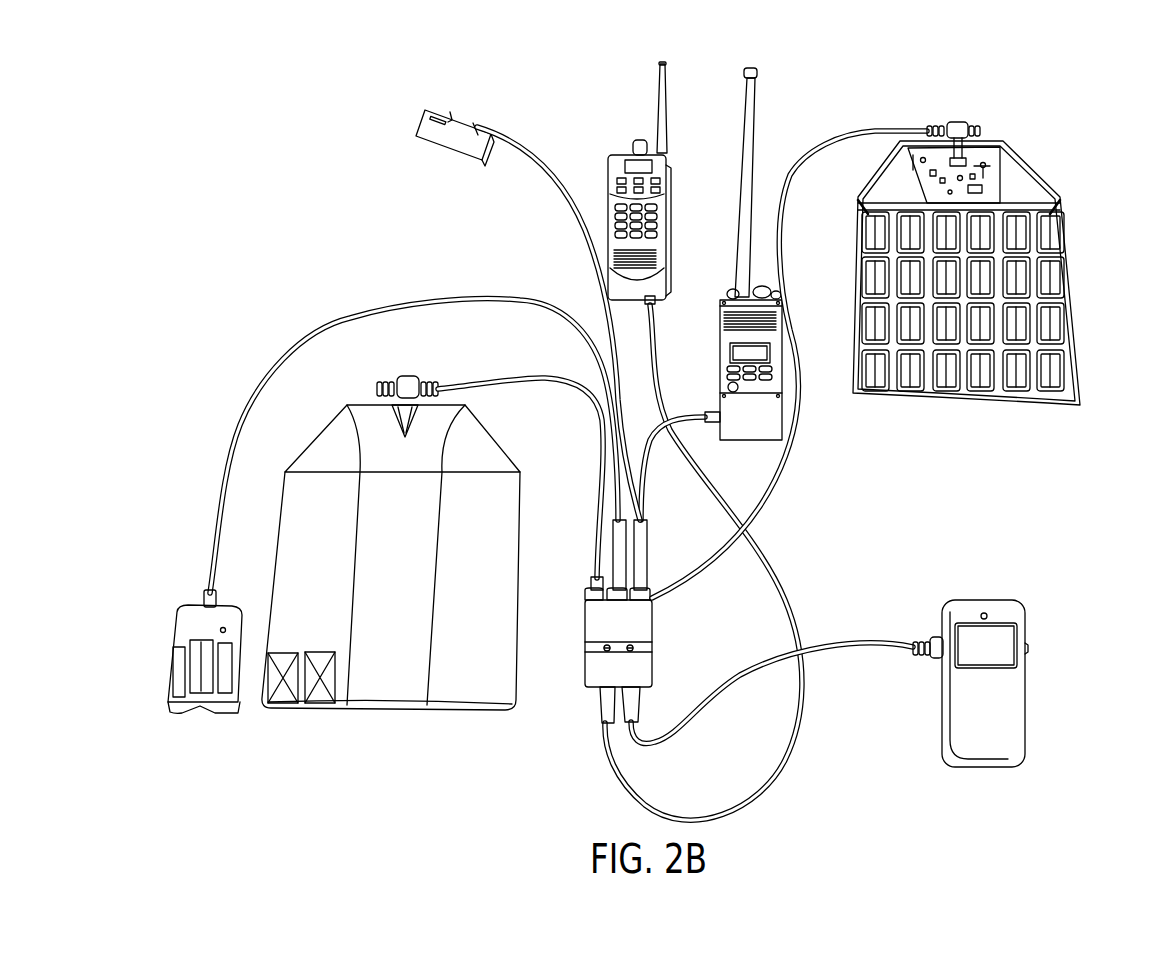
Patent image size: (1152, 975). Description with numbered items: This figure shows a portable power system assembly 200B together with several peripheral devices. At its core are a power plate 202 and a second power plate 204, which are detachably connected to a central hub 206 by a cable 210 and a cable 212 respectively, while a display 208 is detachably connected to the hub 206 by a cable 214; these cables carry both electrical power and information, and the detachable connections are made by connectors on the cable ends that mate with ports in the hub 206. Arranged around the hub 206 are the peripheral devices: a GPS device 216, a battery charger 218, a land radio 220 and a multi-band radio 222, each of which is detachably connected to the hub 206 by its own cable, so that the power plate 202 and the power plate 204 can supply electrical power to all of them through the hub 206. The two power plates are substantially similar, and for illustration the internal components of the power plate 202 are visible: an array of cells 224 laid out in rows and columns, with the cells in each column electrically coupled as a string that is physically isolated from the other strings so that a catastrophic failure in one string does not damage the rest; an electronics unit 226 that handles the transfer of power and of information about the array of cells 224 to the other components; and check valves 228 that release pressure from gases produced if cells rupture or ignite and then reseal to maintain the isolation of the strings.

The portable power system assembly 200B is at (237, 158).
The power plate 202 is at (967, 265).
The power plate 204 is at (338, 435).
The hub 206 is at (603, 672).
The display 208 is at (457, 135).
The cable 210 is at (873, 137).
The cable 212 is at (552, 381).
The cable 214 is at (528, 160).
The GPS device 216 is at (968, 613).
The battery charger 218 is at (227, 705).
The land radio 220 is at (618, 168).
The multi-band radio 222 is at (727, 350).
The array of cells 224 is at (990, 383).
The electronics unit 226 is at (995, 143).
The check valves 228 is at (860, 205).